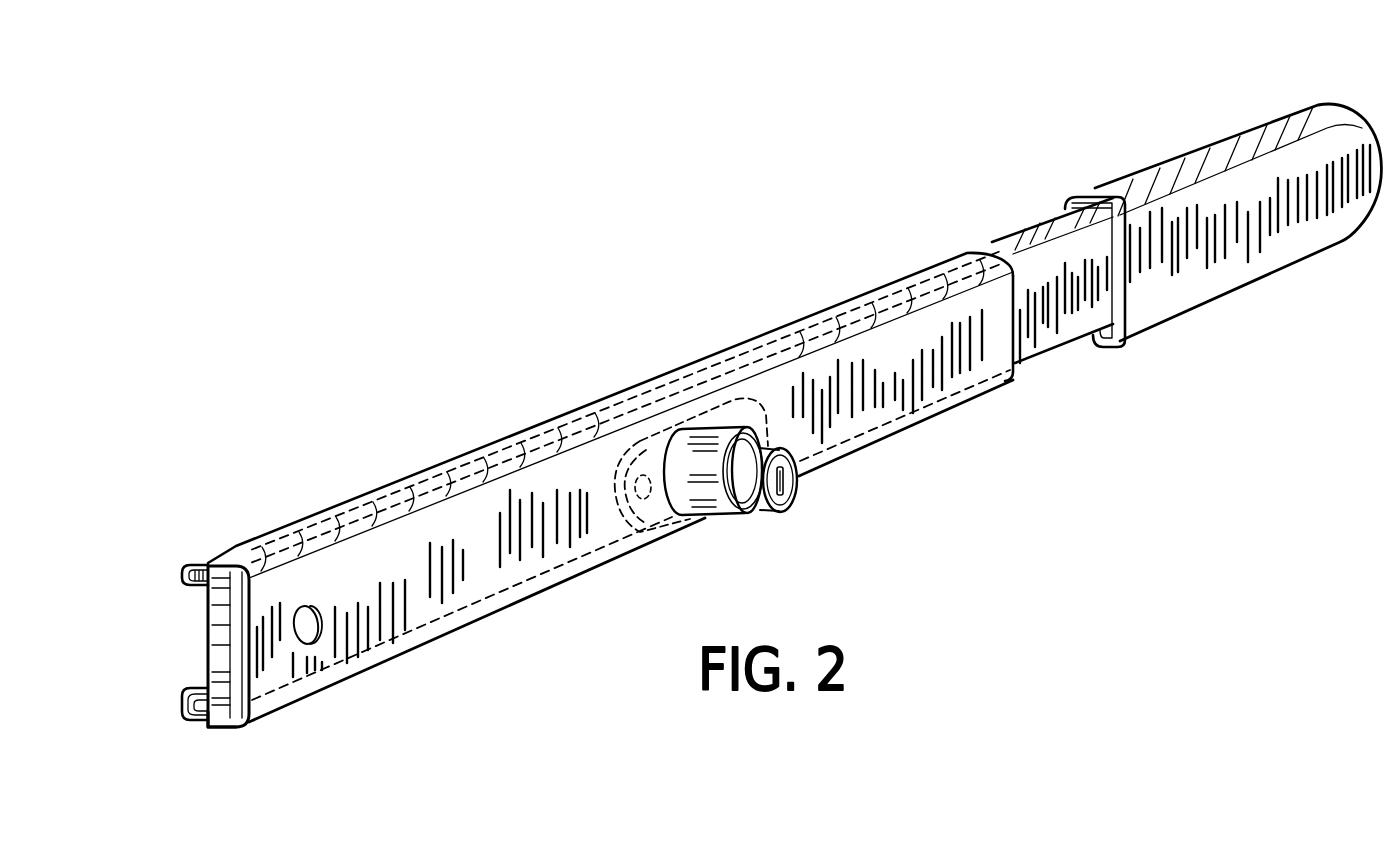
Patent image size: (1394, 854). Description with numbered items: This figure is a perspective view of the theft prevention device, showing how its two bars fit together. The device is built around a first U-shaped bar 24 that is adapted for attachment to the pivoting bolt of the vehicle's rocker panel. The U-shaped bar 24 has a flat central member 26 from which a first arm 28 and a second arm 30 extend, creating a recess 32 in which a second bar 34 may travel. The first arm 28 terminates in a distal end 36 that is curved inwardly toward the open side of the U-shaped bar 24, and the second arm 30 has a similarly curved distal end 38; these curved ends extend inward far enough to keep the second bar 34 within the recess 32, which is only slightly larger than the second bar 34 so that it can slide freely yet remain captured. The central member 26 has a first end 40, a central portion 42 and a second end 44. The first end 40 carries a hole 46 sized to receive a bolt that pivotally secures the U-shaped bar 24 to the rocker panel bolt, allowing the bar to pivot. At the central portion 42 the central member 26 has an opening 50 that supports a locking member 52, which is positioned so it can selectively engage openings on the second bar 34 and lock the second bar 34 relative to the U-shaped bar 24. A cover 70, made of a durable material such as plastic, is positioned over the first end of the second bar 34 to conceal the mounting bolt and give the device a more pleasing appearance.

The U-shaped bar 24 is at (397, 660).
The central member 26 is at (478, 558).
The first arm 28 is at (237, 548).
The second arm 30 is at (207, 722).
The recess 32 is at (203, 687).
The second bar 34 is at (1028, 227).
The distal end of first arm 36 is at (183, 575).
The distal end of second arm 38 is at (181, 696).
The first end 40 is at (283, 712).
The central portion 42 is at (785, 392).
The second end 44 is at (982, 396).
The hole 46 is at (298, 607).
The opening 50 is at (668, 450).
The locking member 52 is at (713, 516).
The cover 70 is at (1232, 135).